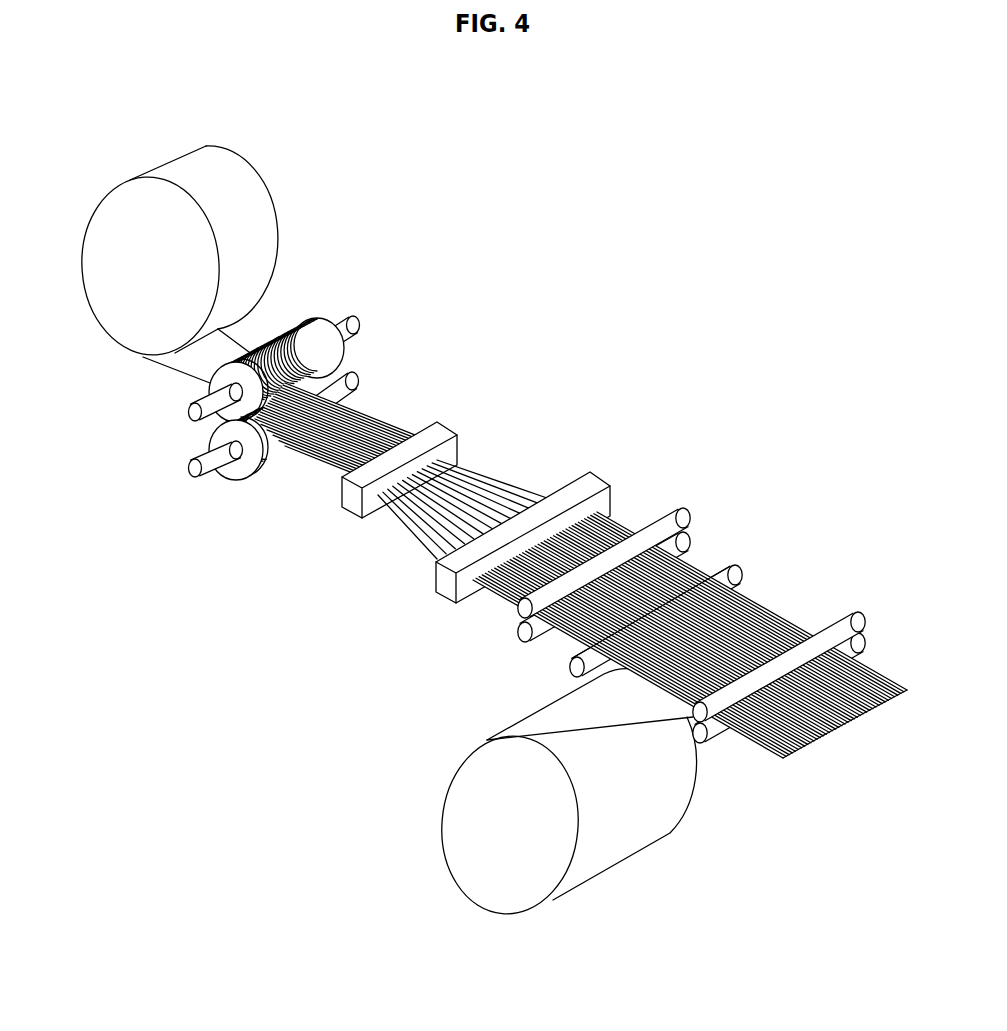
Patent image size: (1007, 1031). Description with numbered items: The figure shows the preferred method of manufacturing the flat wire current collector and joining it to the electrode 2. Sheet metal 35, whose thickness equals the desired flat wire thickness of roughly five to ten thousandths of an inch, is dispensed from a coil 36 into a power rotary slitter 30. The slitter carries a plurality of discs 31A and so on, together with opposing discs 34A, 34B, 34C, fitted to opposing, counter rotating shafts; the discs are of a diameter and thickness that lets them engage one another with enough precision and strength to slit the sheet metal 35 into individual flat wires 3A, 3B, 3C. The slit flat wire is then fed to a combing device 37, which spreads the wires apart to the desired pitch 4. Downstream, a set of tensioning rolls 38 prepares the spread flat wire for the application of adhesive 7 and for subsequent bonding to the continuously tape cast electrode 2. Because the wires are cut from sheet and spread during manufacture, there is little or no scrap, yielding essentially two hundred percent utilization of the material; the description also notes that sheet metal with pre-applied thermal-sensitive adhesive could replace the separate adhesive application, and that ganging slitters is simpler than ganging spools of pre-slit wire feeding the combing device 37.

The electrode 2 is at (438, 805).
The flat wire 3A is at (790, 757).
The flat wire 3B is at (795, 753).
The flat wire 3C is at (803, 750).
The pitch 4 is at (623, 523).
The adhesive 7 is at (747, 563).
The power rotary slitter 30 is at (197, 435).
The disc 31A is at (292, 322).
The disc 34A is at (170, 480).
The disc 34B is at (242, 441).
The disc 34C is at (270, 467).
The sheet metal 35 is at (182, 378).
The coil 36 is at (88, 298).
The combing device 37 is at (468, 443).
The tensioning rolls 38 is at (604, 587).